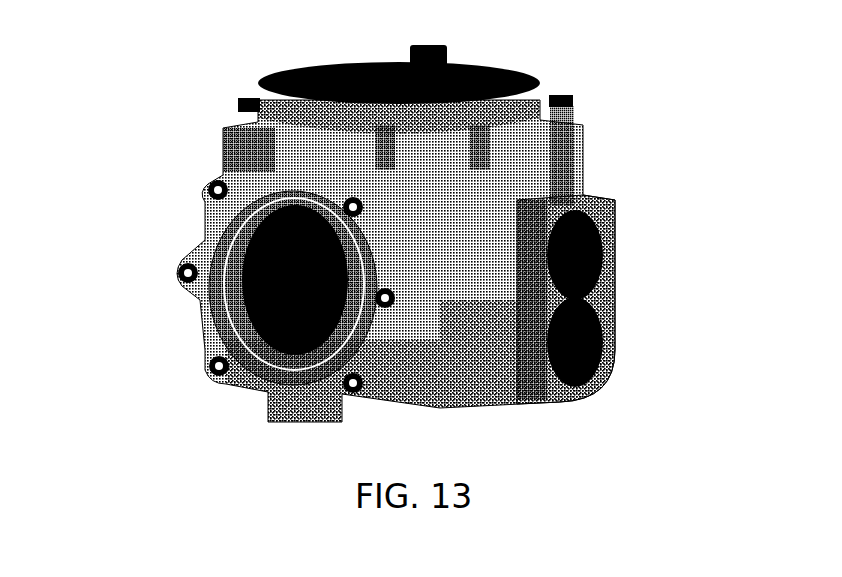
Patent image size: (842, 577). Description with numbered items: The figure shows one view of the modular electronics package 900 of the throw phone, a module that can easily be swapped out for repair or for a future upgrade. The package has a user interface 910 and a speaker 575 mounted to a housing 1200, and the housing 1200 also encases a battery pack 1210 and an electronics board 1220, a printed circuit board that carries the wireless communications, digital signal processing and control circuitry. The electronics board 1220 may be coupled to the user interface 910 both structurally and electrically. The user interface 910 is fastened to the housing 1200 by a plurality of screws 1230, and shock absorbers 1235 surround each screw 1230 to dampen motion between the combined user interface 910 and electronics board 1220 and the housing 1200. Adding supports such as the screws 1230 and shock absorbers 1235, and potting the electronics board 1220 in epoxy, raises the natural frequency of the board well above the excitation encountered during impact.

The modular electronics package 900 is at (423, 238).
The user interface 910 is at (505, 82).
The speaker 575 is at (258, 272).
The housing 1200 is at (645, 287).
The battery pack 1210 is at (580, 337).
The electronics board 1220 is at (465, 357).
The screws 1230 is at (248, 97).
The shock absorbers 1235 is at (243, 145).